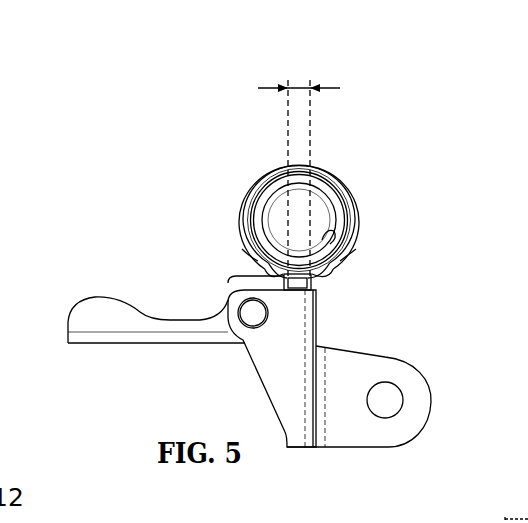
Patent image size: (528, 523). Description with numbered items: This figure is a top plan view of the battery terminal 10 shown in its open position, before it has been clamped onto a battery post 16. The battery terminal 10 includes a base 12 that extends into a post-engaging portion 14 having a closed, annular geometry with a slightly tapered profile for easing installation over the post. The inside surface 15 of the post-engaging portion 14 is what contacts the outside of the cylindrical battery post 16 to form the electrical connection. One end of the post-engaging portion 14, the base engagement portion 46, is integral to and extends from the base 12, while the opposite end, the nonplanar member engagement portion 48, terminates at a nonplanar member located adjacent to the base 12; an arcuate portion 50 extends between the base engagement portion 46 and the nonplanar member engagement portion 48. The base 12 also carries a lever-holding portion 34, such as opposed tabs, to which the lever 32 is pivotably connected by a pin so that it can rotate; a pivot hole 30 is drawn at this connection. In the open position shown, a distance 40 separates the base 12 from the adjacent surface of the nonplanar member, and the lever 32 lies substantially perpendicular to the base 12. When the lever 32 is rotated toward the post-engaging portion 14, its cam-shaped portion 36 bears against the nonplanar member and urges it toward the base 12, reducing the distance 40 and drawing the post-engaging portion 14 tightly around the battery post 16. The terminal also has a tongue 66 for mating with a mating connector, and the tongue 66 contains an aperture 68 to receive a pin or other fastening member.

The battery terminal 10 is at (387, 251).
The base 12 is at (318, 451).
The post-engaging portion 14 is at (328, 168).
The inside surface 15 is at (330, 238).
The battery post 16 is at (316, 212).
The pivot hole 30 is at (232, 278).
The lever 32 is at (108, 342).
The lever-holding portion 34 is at (280, 352).
The cam-shaped portion 36 is at (313, 281).
The distance 40 is at (298, 86).
The base engagement portion 46 is at (360, 261).
The nonplanar member engagement portion 48 is at (250, 253).
The arcuate portion 50 is at (340, 183).
The tongue 66 is at (431, 400).
The aperture 68 is at (390, 397).